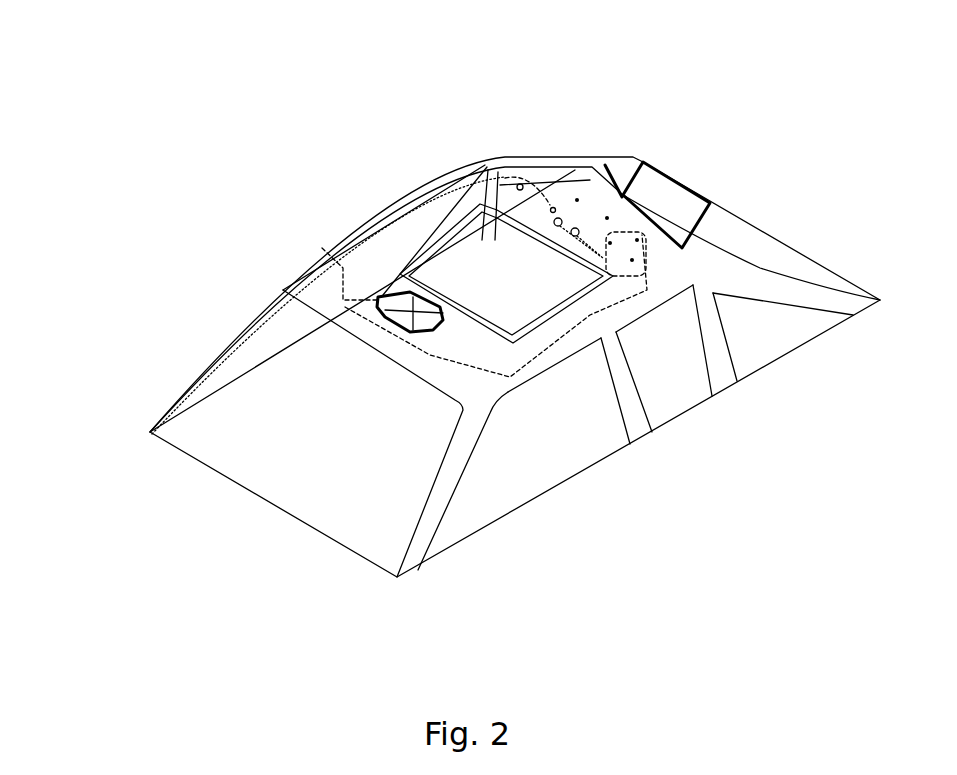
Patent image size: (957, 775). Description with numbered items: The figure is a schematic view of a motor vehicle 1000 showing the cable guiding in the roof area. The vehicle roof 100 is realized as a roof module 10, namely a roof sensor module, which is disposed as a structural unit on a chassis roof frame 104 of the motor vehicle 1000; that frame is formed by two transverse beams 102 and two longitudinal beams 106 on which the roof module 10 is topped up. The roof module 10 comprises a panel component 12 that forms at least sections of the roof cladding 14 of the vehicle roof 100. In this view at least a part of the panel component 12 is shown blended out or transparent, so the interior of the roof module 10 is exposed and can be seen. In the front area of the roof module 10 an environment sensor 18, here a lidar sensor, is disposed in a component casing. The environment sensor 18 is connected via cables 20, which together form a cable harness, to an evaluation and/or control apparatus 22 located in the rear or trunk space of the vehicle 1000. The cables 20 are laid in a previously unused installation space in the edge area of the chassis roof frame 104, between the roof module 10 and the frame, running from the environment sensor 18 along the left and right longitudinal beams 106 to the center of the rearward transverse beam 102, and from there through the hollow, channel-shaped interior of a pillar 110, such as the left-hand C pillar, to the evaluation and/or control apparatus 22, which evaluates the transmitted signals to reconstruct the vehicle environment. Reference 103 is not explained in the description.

The roof module 10 is at (447, 152).
The panel component 12 is at (478, 392).
The roof cladding 14 is at (313, 290).
The environment sensor 18 is at (380, 300).
The cable 20 is at (555, 212).
The evaluation and/or control apparatus 22 is at (643, 197).
The vehicle roof 100 is at (200, 273).
The transverse beam 102 is at (430, 368).
The lower edge 103 is at (670, 465).
The chassis roof frame 104 is at (547, 357).
The longitudinal beam 106 is at (283, 287).
The pillar 110 is at (520, 160).
The motor vehicle 1000 is at (175, 340).